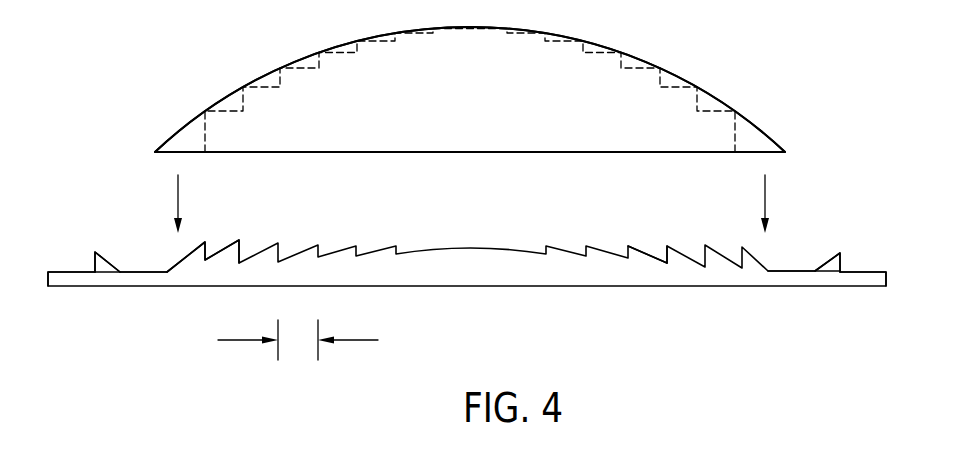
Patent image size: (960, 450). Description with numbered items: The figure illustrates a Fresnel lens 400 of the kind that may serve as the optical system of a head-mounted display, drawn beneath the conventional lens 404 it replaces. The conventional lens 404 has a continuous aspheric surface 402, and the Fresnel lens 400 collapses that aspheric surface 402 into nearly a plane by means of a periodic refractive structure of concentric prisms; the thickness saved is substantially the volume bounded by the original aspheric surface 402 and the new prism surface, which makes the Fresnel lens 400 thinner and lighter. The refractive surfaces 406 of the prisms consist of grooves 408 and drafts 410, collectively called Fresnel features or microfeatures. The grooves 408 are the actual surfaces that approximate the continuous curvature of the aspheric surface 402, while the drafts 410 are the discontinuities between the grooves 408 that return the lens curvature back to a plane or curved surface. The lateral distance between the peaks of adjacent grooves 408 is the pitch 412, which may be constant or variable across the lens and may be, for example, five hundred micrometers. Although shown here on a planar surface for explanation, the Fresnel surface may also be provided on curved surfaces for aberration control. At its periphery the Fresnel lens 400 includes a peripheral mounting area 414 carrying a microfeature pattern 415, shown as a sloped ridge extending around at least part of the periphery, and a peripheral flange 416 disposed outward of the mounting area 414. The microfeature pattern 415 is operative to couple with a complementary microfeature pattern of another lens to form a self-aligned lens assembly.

The Fresnel lens 400 is at (805, 228).
The aspheric surface 402 is at (651, 65).
The conventional lens 404 is at (730, 88).
The refractive surfaces 406 is at (163, 242).
The grooves 408 is at (654, 258).
The drafts 410 is at (644, 253).
The pitch 412 is at (237, 341).
The peripheral mounting area 414 is at (163, 293).
The microfeature pattern 415 is at (108, 258).
The peripheral flange 416 is at (92, 293).